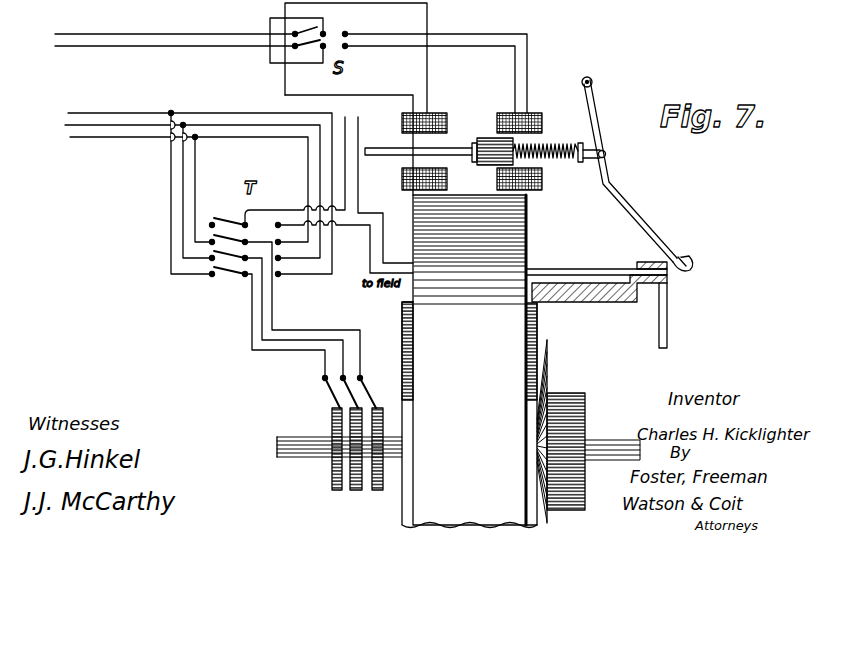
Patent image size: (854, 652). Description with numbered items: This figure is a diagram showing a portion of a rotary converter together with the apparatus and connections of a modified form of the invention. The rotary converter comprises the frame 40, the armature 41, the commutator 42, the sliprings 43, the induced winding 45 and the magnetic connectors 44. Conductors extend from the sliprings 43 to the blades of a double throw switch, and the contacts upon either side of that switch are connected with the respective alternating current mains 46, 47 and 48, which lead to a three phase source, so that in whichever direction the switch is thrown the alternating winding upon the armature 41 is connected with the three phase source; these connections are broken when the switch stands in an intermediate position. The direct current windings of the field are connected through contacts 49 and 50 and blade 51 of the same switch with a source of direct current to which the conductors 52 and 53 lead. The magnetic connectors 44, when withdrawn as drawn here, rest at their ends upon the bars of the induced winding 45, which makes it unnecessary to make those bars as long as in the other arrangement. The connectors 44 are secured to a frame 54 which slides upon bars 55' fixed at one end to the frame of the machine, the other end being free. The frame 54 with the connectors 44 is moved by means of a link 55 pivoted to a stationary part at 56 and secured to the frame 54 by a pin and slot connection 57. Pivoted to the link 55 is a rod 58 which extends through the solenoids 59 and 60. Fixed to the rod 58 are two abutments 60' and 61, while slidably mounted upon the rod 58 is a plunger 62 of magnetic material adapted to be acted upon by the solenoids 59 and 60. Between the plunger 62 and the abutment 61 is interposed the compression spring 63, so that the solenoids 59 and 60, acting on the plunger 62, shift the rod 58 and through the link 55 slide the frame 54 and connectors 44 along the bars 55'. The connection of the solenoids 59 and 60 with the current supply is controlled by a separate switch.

The frame 40 is at (469, 361).
The armature 41 is at (540, 357).
The commutator 42 is at (585, 415).
The sliprings 43 is at (378, 491).
The magnetic connectors 44 is at (606, 302).
The induced winding 45 is at (551, 283).
The alternating current main 46 is at (68, 113).
The alternating current main 47 is at (65, 124).
The alternating current main 48 is at (70, 137).
The contact 49 is at (242, 247).
The contact 50 is at (280, 223).
The blade 51 is at (234, 218).
The conductor 52 is at (344, 121).
The conductor 53 is at (359, 121).
The frame 54 is at (668, 315).
The link 55 is at (653, 177).
The bars 55' is at (639, 256).
The pivot 56 is at (593, 81).
The pin and slot connection 57 is at (689, 268).
The rod 58 is at (610, 154).
The solenoid 59 is at (540, 113).
The solenoid 60 is at (438, 112).
The abutment 60' is at (441, 181).
The abutment 61 is at (582, 163).
The plunger 62 is at (485, 138).
The compression spring 63 is at (568, 147).